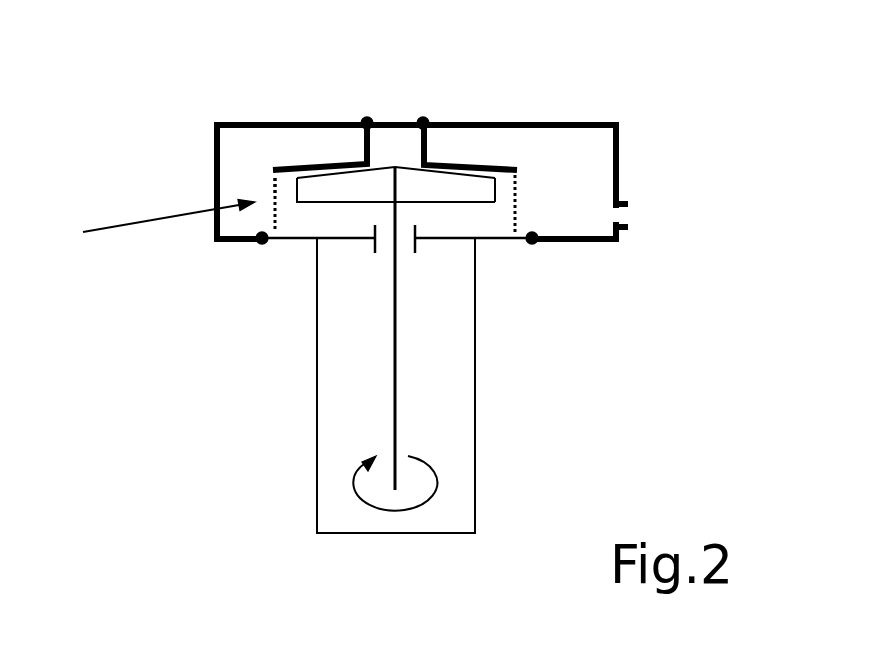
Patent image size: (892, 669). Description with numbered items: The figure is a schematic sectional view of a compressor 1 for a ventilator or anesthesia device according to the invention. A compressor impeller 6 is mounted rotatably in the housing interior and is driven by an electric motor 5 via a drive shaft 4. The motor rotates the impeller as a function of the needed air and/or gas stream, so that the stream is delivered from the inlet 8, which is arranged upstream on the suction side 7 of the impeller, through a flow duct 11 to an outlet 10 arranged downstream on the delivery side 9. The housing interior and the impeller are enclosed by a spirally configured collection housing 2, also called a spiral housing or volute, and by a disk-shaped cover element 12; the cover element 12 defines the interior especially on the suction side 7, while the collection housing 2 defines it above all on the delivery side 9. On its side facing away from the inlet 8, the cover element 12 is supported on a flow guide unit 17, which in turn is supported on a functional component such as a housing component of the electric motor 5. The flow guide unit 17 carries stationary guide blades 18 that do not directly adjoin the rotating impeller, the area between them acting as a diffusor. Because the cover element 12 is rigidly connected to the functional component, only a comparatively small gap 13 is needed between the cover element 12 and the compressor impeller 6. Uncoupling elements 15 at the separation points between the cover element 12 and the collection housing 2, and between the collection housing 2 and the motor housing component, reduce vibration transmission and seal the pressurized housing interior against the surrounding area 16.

The compressor 1 is at (404, 271).
The collection housing 2 is at (466, 187).
The drive shaft 4 is at (397, 365).
The electric motor 5 is at (347, 398).
The compressor impeller 6 is at (417, 238).
The suction side 7 is at (423, 144).
The inlet 8 is at (389, 128).
The delivery side 9 is at (158, 226).
The outlet 10 is at (618, 215).
The flow duct 11 is at (497, 188).
The cover element 12 is at (312, 128).
The gap 13 is at (515, 128).
The uncoupling elements 15 is at (367, 121).
The surrounding area 16 is at (205, 505).
The flow guide unit 17 is at (277, 211).
The guide blades 18 is at (277, 182).